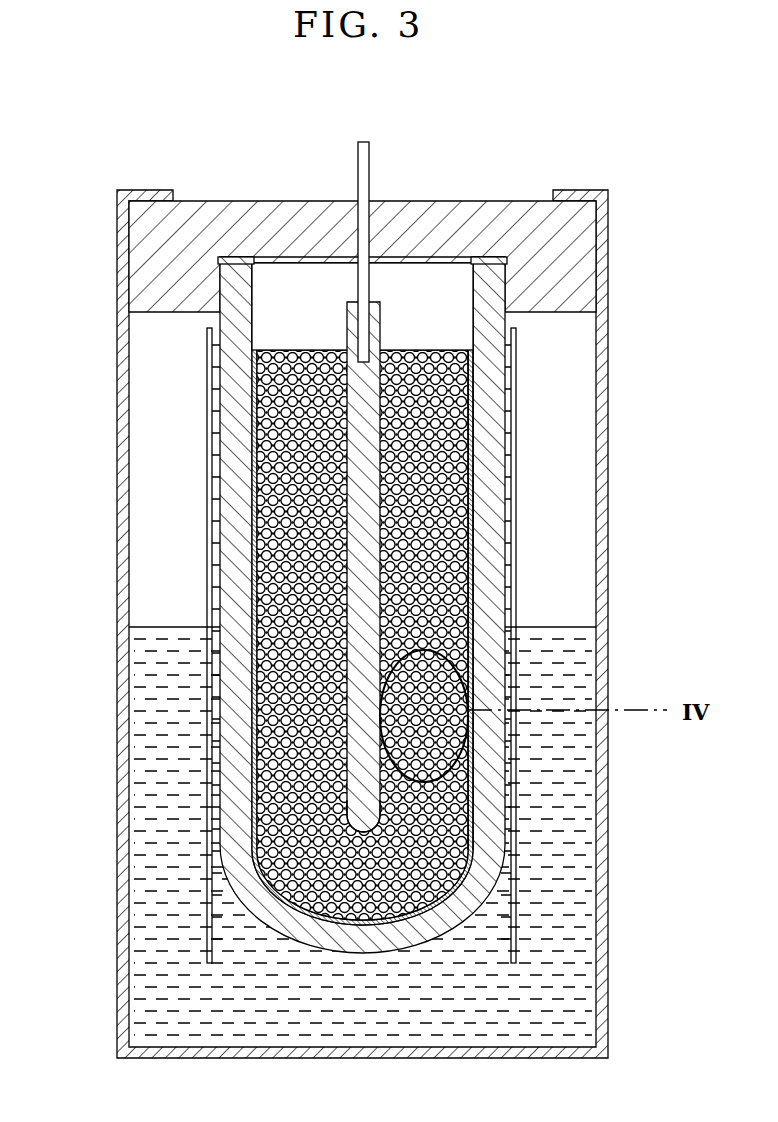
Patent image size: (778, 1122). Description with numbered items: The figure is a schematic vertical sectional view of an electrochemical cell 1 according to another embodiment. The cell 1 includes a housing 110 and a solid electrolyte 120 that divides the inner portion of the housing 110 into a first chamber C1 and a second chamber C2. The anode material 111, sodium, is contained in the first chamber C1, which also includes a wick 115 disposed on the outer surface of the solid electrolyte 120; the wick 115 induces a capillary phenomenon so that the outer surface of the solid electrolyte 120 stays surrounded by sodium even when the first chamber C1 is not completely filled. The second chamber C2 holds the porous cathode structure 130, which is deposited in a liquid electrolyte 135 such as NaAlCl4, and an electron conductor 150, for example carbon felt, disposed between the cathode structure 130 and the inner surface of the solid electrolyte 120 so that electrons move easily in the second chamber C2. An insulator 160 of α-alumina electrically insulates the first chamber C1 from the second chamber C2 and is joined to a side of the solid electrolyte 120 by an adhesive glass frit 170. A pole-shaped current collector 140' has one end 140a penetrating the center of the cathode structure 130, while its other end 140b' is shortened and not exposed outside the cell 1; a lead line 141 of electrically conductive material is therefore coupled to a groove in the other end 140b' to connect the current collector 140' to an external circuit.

The electrochemical cell 1 is at (654, 111).
The housing 110 is at (606, 194).
The anode material 111 is at (582, 858).
The wick 115 is at (205, 942).
The solid electrolyte 120 is at (493, 440).
The cathode structure 130 is at (443, 483).
The liquid electrolyte 135 is at (473, 617).
The current collector 140' is at (521, 567).
The one end of the current collector 140a is at (365, 800).
The other end of the current collector 140b' is at (586, 556).
The lead line 141 is at (367, 150).
The electron conductor 150 is at (477, 525).
The insulator 160 is at (535, 217).
The glass frit 170 is at (237, 260).
The first chamber C1 is at (572, 357).
The second chamber C2 is at (442, 307).